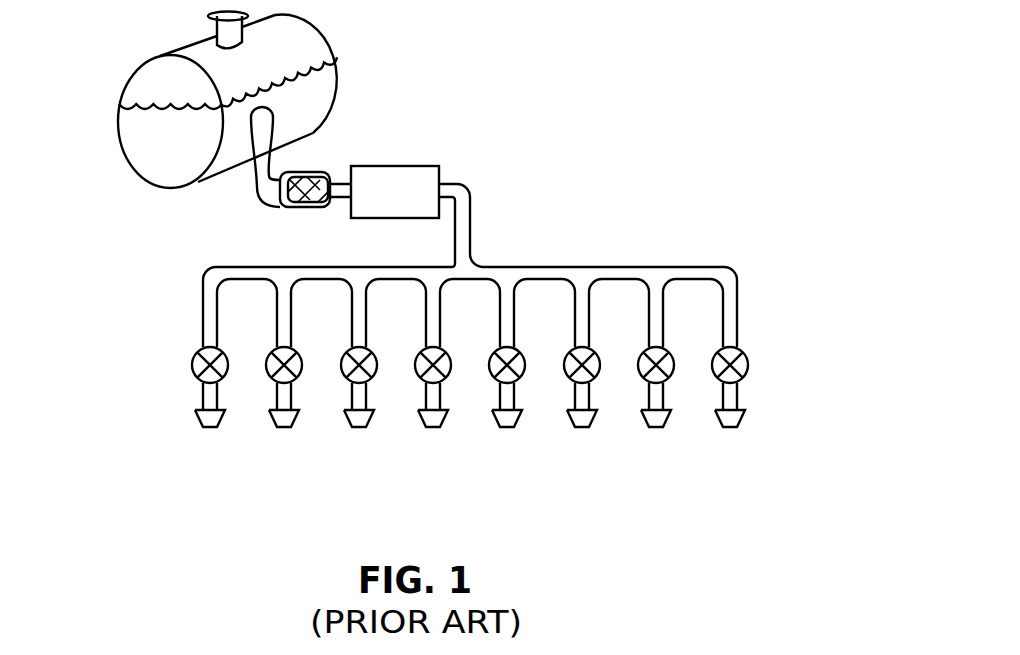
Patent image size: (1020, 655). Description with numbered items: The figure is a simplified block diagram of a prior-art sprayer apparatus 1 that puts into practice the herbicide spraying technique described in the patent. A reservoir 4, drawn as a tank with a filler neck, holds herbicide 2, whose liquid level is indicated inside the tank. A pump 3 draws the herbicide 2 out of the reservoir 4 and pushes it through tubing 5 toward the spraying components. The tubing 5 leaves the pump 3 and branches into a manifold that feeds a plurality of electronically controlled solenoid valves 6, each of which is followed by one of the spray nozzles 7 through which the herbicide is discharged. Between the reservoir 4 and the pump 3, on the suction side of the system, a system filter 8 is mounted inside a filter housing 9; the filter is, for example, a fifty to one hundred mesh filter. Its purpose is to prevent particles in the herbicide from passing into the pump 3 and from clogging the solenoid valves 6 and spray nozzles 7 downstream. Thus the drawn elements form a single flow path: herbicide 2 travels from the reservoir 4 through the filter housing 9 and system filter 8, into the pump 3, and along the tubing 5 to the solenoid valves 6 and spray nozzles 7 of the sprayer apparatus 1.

The sprayer apparatus 1 is at (512, 100).
The herbicide 2 is at (142, 148).
The pump 3 is at (387, 166).
The reservoir 4 is at (322, 36).
The tubing 5 is at (253, 183).
The electronically controlled solenoid valves 6 is at (193, 357).
The spray nozzles 7 is at (201, 427).
The system filter 8 is at (312, 180).
The filter housing 9 is at (293, 210).